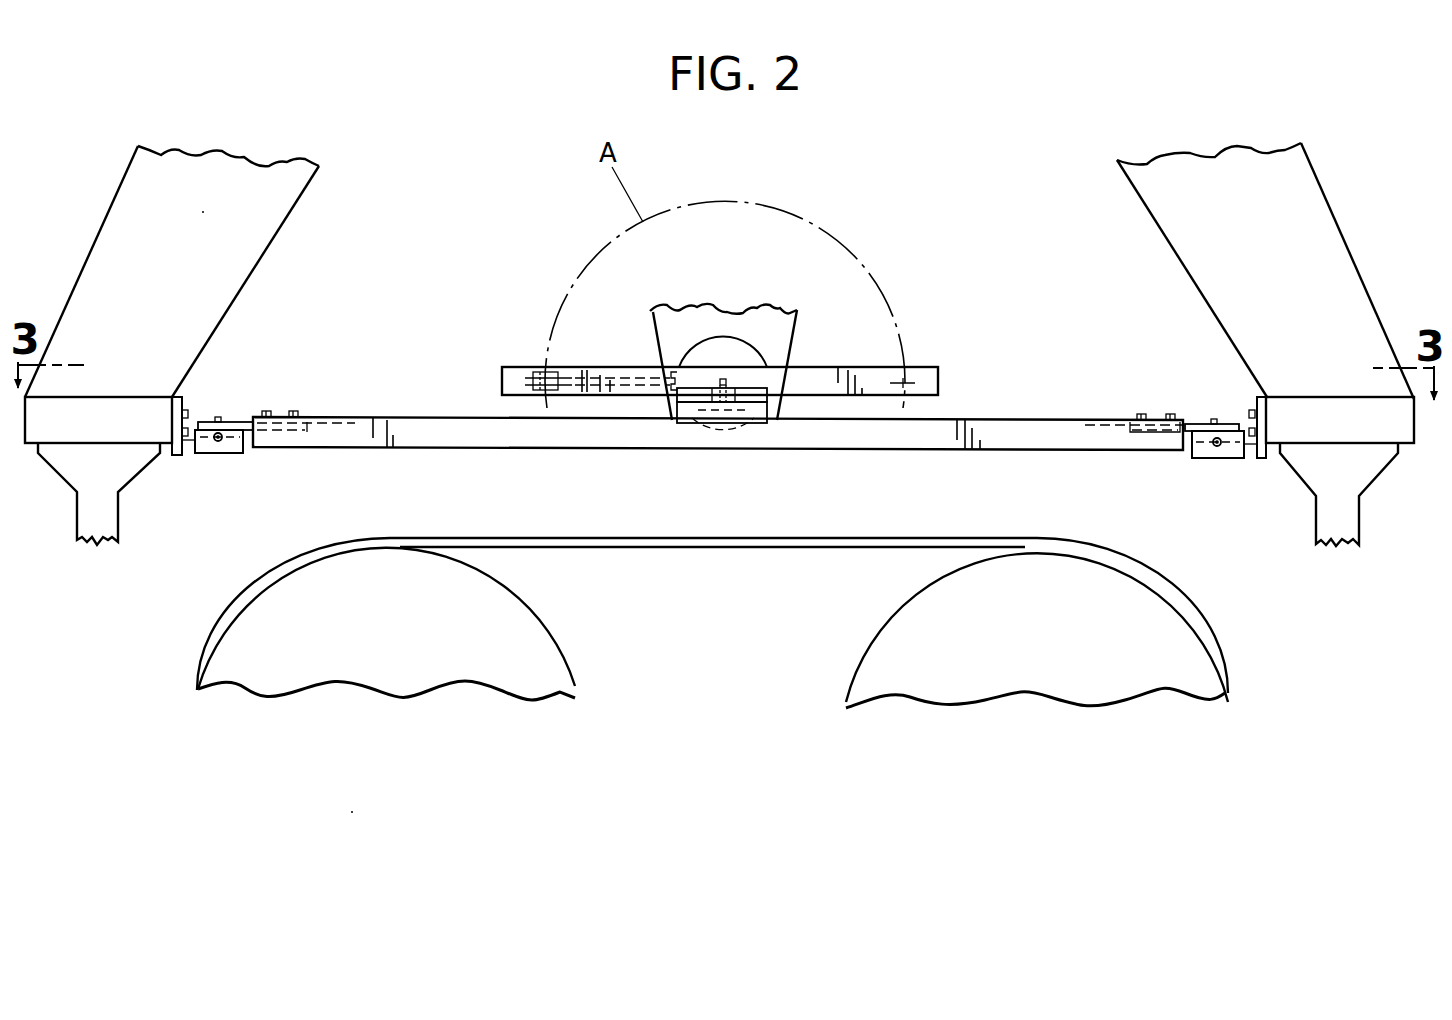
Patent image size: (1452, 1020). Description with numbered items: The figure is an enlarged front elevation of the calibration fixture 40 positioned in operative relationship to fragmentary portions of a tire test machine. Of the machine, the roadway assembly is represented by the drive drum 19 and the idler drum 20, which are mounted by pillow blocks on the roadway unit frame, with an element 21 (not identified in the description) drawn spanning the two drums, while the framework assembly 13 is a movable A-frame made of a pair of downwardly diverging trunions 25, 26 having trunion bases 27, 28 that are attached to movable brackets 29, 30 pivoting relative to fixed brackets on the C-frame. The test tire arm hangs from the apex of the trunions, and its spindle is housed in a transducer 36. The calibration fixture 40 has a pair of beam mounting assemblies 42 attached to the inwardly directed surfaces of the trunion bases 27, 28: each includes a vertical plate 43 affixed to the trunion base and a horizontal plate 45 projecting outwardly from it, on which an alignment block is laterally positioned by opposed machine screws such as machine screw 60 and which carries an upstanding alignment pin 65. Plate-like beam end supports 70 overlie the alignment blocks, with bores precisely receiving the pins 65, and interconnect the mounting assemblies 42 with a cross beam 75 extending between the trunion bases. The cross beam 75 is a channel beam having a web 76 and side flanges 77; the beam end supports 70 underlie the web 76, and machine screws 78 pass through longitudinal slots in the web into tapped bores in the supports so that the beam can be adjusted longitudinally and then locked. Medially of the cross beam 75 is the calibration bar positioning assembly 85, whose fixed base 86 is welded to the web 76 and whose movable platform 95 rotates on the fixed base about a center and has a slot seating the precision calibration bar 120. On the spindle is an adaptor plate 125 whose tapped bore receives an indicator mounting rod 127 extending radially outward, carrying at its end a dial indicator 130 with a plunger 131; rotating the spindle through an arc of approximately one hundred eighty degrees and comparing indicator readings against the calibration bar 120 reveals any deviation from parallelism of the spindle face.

The framework assembly 13 is at (1350, 238).
The drive drum 19 is at (318, 668).
The idler drum 20 is at (1082, 677).
The fender 21 is at (898, 542).
The trunion 25 is at (143, 196).
The trunion 26 is at (1296, 189).
The trunion base 27 is at (124, 413).
The trunion base 28 is at (1300, 413).
The movable bracket 29 is at (90, 508).
The movable bracket 30 is at (1348, 512).
The transducer 36 is at (773, 323).
The calibration fixture 40 is at (987, 378).
The beam mounting assembly 42 is at (209, 462).
The vertical plate 43 is at (175, 397).
The horizontal plate 45 is at (190, 455).
The machine screw 60 is at (222, 441).
The alignment pin 65 is at (219, 417).
The beam end support 70 is at (233, 426).
The cross beam 75 is at (1010, 452).
The web 76 is at (417, 417).
The side flange 77 is at (435, 432).
The machine screw 78 is at (294, 411).
The calibration bar positioning assembly 85 is at (739, 372).
The fixed base 86 is at (683, 410).
The movable platform 95 is at (760, 383).
The calibration bar 120 is at (925, 385).
The adaptor plate 125 is at (712, 352).
The indicator mounting rod 127 is at (615, 398).
The dial indicator 130 is at (535, 378).
The plunger 131 is at (548, 398).